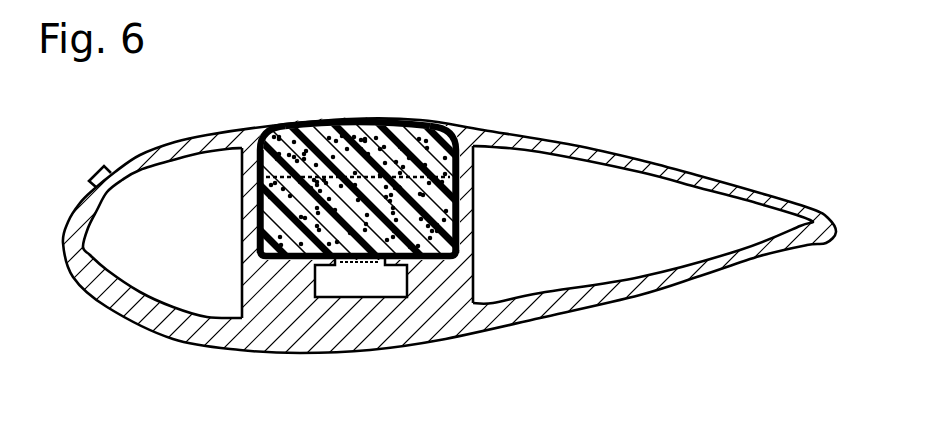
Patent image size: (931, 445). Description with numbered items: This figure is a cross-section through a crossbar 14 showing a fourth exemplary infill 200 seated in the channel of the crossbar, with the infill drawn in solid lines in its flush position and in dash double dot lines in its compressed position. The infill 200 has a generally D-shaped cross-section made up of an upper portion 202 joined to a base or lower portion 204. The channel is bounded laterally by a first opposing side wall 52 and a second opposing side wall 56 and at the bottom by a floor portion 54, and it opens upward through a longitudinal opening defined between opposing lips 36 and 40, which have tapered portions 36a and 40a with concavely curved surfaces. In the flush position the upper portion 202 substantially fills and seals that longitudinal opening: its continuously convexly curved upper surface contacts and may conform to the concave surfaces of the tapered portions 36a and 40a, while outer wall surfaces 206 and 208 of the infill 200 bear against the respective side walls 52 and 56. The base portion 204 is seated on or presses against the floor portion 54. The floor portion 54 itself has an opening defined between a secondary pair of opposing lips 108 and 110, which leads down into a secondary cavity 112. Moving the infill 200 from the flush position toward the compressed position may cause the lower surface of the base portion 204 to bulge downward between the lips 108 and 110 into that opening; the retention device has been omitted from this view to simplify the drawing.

The crossbar 14 is at (73, 207).
The infill 200 is at (331, 171).
The upper portion 202 is at (345, 120).
The opposing lip 36 is at (331, 180).
The tapered portion 36a is at (272, 137).
The opposing lip 40 is at (430, 127).
The tapered portion 40a is at (453, 138).
The outer wall surface 206 is at (257, 180).
The outer wall surface 208 is at (460, 190).
The first opposing side wall 52 is at (240, 188).
The second opposing side wall 56 is at (475, 205).
The floor portion 54 is at (280, 257).
The base portion 204 is at (288, 262).
The opposing lip 108 is at (337, 266).
The opposing lip 110 is at (386, 266).
The secondary cavity 112 is at (375, 269).